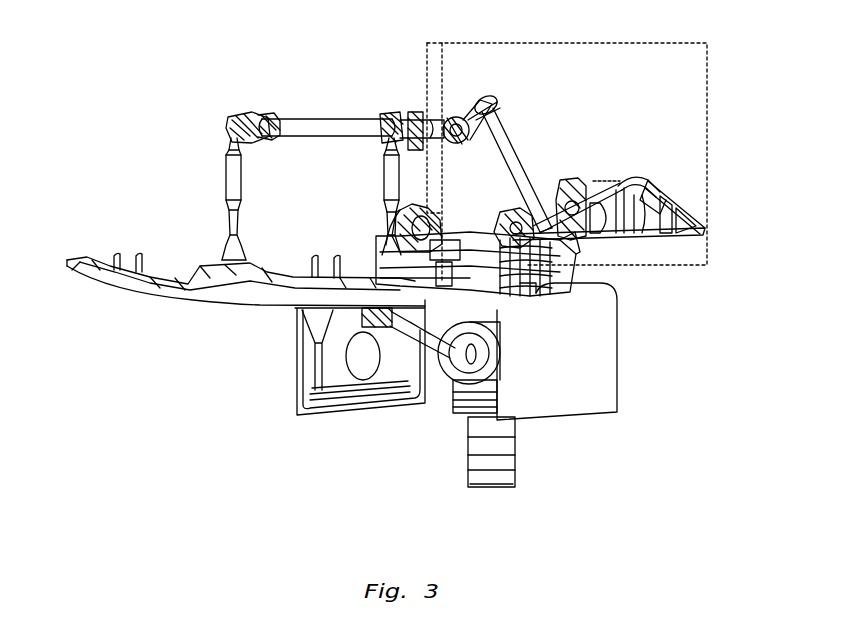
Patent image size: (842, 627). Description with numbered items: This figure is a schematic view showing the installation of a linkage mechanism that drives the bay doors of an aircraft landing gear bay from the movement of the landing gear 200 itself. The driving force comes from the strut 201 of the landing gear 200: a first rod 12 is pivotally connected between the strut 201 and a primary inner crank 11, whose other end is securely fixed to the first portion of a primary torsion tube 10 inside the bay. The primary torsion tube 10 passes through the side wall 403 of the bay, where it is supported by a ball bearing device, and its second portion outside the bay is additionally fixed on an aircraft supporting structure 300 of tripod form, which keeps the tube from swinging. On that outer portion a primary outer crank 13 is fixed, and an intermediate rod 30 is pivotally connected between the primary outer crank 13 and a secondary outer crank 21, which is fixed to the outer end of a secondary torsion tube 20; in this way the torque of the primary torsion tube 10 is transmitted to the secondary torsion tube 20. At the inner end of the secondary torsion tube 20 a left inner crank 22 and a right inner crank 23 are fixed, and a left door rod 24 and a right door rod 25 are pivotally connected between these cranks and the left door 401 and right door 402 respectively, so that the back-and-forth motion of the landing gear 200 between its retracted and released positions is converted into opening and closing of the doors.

The primary torsion tube 10 is at (590, 194).
The primary inner crank 11 is at (506, 212).
The first rod 12 is at (547, 284).
The primary outer crank 13 is at (556, 184).
The secondary torsion tube 20 is at (308, 124).
The secondary outer crank 21 is at (470, 110).
The left inner crank 22 is at (243, 115).
The right inner crank 23 is at (398, 118).
The left door rod 24 is at (240, 176).
The right door rod 25 is at (383, 176).
The intermediate rod 30 is at (517, 188).
The landing gear 200 is at (442, 417).
The strut 201 is at (497, 288).
The aircraft supporting structure 300 is at (648, 196).
The left door 401 is at (246, 296).
The right door 402 is at (380, 276).
The side wall 403 is at (690, 84).